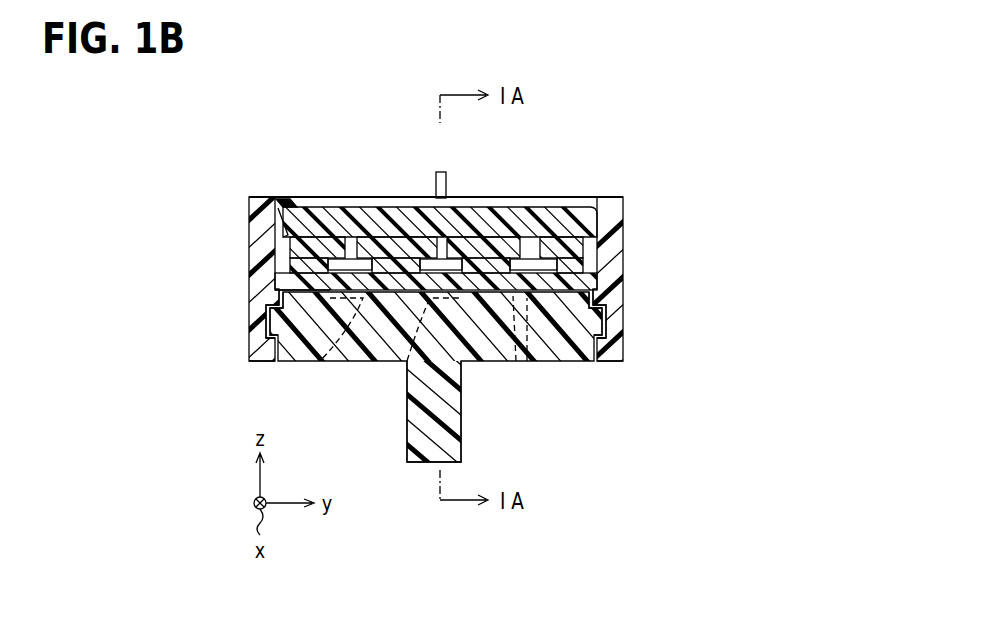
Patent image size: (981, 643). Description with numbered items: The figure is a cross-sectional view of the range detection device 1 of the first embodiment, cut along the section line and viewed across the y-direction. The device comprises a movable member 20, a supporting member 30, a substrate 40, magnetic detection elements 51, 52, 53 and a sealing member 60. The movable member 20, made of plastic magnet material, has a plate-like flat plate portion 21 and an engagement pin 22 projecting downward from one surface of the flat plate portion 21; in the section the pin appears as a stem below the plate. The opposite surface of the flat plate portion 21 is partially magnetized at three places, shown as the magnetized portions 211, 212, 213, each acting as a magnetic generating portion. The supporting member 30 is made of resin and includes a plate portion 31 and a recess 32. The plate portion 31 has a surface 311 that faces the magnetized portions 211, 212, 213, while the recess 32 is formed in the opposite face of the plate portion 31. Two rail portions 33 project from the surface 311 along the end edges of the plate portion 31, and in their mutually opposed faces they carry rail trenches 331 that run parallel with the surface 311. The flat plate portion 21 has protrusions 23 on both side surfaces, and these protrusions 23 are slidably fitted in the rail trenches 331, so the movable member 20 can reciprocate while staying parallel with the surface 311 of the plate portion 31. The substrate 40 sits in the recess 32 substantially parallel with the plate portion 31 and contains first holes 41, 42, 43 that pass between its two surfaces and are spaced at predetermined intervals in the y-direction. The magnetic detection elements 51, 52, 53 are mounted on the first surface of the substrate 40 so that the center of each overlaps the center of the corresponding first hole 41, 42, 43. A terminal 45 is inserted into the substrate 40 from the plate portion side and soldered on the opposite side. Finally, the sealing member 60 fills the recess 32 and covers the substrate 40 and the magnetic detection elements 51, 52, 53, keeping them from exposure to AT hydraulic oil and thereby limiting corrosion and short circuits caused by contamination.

The range detection device 1 is at (244, 175).
The movable member 20 is at (404, 432).
The flat plate portion 21 is at (582, 365).
The magnetized portion 211 is at (318, 361).
The magnetized portion 212 is at (407, 361).
The magnetized portion 213 is at (516, 361).
The engagement pin 22 is at (462, 440).
The protrusion 23 is at (268, 325).
The supporting member 30 is at (638, 194).
The plate portion 31 is at (615, 288).
The surface 311 is at (277, 298).
The recess 32 is at (296, 207).
The rail portion 33 is at (258, 345).
The rail trench 331 is at (260, 333).
The substrate 40 is at (394, 237).
The first hole 41 is at (352, 240).
The first hole 42 is at (448, 237).
The first hole 43 is at (532, 245).
The terminal 45 is at (436, 190).
The magnetic detection element 51 is at (356, 273).
The magnetic detection element 52 is at (463, 290).
The magnetic detection element 53 is at (545, 290).
The sealing member 60 is at (561, 215).